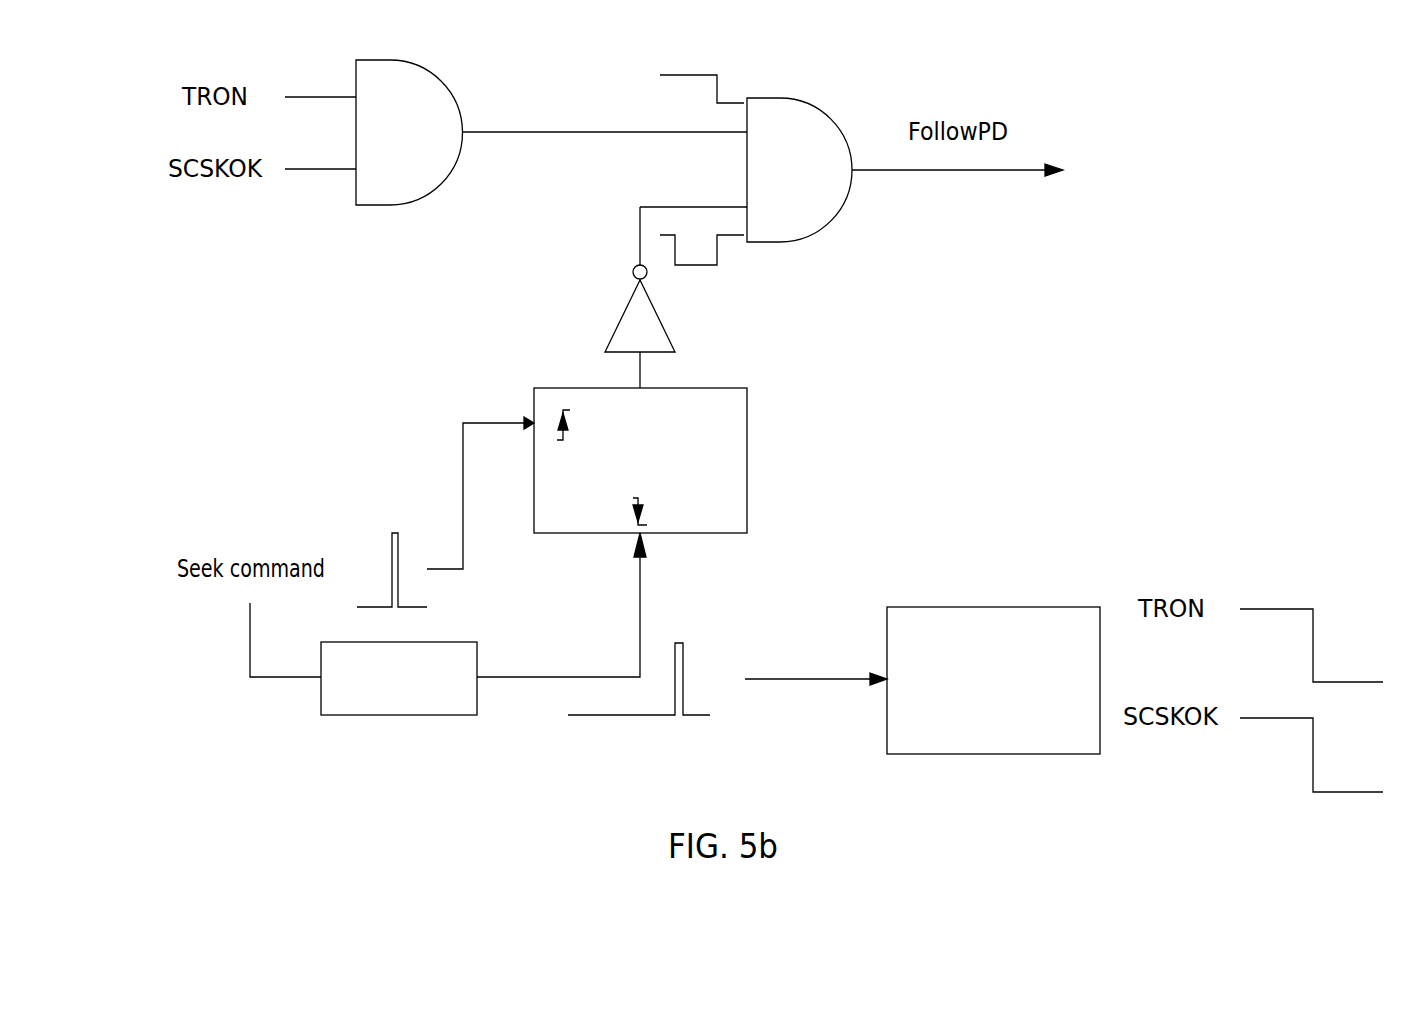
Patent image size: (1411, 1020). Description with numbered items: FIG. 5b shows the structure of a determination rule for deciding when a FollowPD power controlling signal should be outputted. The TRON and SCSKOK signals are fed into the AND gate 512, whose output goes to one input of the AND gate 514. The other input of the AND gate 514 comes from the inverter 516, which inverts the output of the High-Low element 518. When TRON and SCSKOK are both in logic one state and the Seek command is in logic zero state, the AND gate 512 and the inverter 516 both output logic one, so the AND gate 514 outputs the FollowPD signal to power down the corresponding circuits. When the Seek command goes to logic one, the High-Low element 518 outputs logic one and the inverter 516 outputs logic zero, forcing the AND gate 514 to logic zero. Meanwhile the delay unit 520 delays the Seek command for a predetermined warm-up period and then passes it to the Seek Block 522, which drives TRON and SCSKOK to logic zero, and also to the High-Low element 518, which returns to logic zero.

The AND gate 512 is at (380, 207).
The AND gate 514 is at (830, 215).
The inverter 516 is at (623, 312).
The High-Low element 518 is at (747, 470).
The delay unit 520 is at (348, 715).
The Seek Block 522 is at (1003, 607).